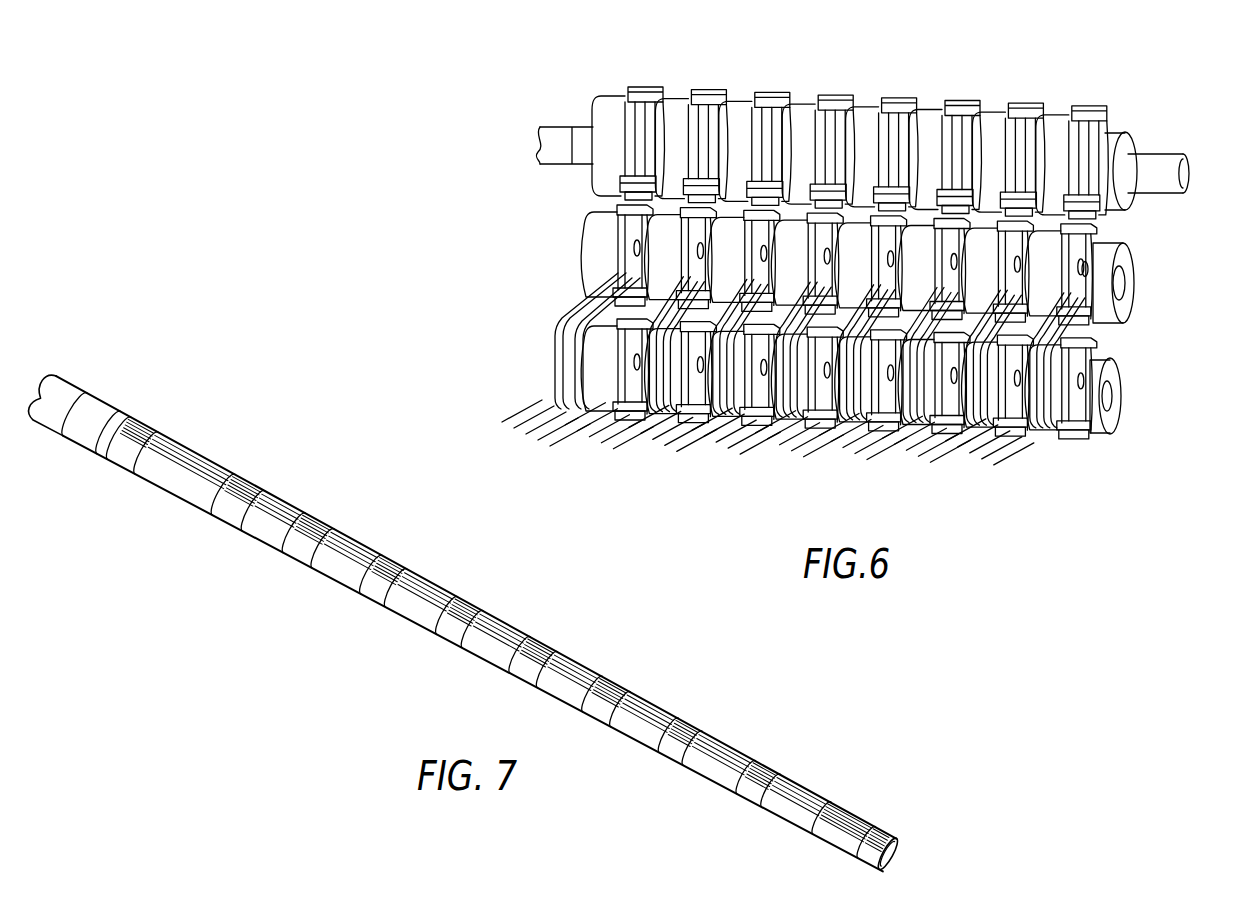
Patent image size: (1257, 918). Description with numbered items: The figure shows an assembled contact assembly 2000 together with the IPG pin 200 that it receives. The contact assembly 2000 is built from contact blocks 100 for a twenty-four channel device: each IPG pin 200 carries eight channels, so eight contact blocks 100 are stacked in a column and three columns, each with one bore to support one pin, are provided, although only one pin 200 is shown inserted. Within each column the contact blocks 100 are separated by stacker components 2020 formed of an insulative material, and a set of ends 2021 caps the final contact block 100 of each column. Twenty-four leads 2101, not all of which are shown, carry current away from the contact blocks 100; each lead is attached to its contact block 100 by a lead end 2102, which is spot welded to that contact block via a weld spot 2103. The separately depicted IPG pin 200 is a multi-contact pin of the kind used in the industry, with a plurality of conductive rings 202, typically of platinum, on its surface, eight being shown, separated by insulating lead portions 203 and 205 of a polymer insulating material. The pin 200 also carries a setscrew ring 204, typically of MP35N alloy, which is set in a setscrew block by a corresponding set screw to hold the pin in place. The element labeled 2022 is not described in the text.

In FIG. 6, the contact assembly 2000 is at (600, 58).
In FIG. 6, the stacker component 2020 is at (1057, 133).
In FIG. 6, the contact block 100 is at (1093, 155).
In FIG. 6, the end 2021 is at (1115, 150).
In FIG. 6, the IPG pin 200 is at (1165, 163).
In FIG. 7, the IPG pin 200 is at (528, 608).
In FIG. 6, the weld spot 2103 is at (1093, 270).
In FIG. 6, the lead end 2102 is at (1087, 290).
In FIG. 6, the end hub 2022 is at (1117, 403).
In FIG. 6, the lead 2101 is at (558, 350).
In FIG. 7, the conductive ring 202 is at (360, 604).
In FIG. 7, the insulating lead portion 203 is at (743, 808).
In FIG. 7, the setscrew ring 204 is at (187, 456).
In FIG. 7, the insulating lead portion 205 is at (867, 824).